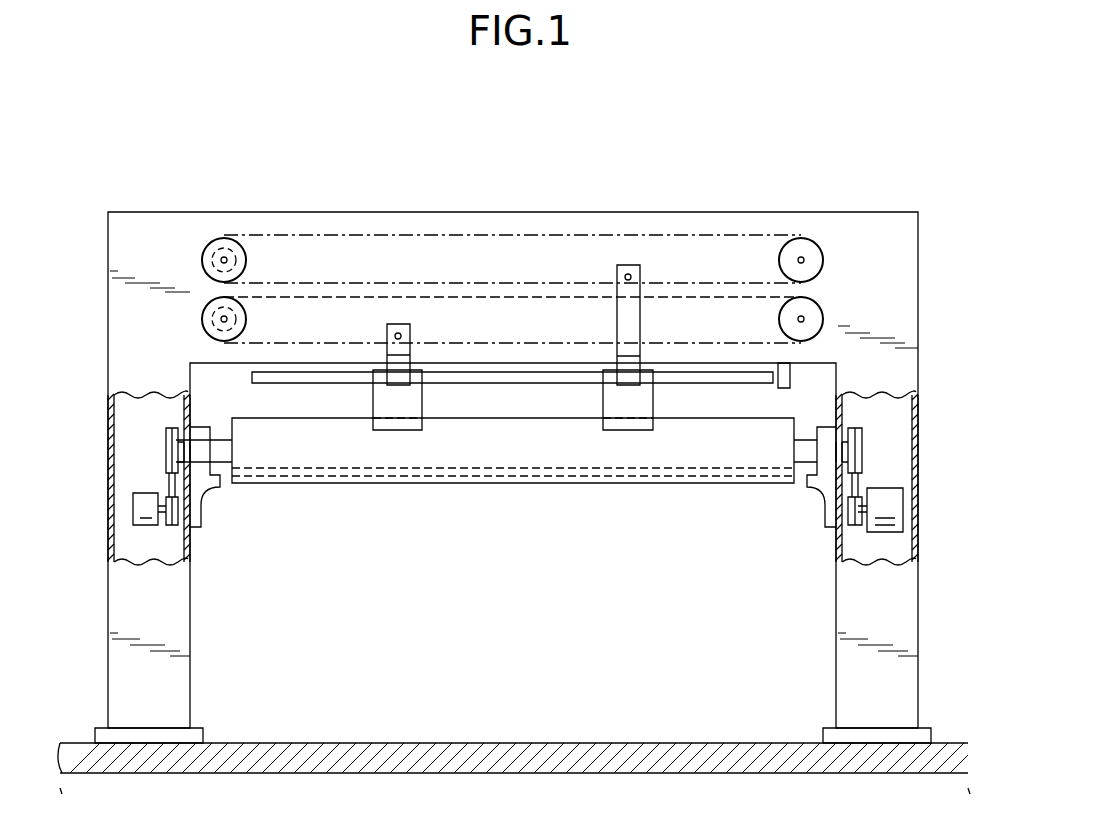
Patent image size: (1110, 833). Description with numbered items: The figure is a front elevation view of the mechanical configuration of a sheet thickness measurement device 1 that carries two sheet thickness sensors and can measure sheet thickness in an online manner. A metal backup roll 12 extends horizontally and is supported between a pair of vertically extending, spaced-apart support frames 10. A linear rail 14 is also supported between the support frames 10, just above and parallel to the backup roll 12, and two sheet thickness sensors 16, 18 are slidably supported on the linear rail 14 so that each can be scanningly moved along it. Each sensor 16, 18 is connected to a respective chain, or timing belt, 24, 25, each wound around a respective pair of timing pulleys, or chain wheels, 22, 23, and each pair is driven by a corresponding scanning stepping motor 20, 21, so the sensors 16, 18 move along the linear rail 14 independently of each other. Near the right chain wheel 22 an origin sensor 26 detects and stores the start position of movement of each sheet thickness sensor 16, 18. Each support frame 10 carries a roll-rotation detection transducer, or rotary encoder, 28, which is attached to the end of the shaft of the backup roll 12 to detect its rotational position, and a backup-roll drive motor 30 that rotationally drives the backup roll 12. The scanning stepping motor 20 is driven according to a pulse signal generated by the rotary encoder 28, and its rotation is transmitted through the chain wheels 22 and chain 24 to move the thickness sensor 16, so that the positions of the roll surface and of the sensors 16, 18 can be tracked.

The sheet thickness measurement device 1 is at (697, 173).
The support frame 10 is at (142, 325).
The metal backup roll 12 is at (533, 455).
The linear rail 14 is at (462, 370).
The sheet thickness sensor 16 is at (368, 398).
The sheet thickness sensor 18 is at (658, 398).
The scanning stepping motor 20 is at (238, 318).
The scanning stepping motor 21 is at (224, 238).
The timing pulley (chain wheel) 22 is at (810, 316).
The timing pulley (chain wheel) 23 is at (801, 252).
The chain (timing belt) 24 is at (334, 304).
The chain (timing belt) 25 is at (385, 242).
The origin sensor 26 is at (790, 380).
The roll-rotation detection transducer (rotary encoder) 28 is at (862, 437).
The backup-roll drive motor 30 is at (888, 500).